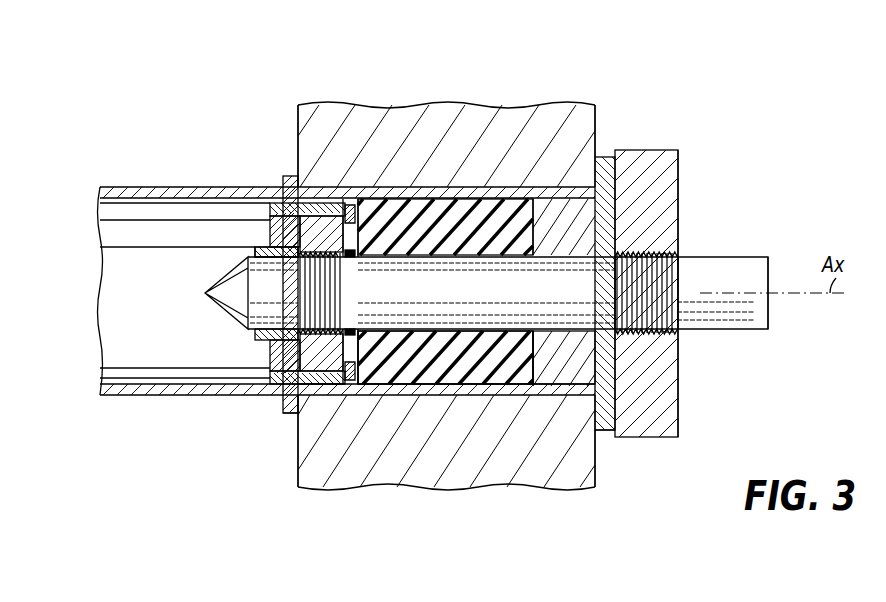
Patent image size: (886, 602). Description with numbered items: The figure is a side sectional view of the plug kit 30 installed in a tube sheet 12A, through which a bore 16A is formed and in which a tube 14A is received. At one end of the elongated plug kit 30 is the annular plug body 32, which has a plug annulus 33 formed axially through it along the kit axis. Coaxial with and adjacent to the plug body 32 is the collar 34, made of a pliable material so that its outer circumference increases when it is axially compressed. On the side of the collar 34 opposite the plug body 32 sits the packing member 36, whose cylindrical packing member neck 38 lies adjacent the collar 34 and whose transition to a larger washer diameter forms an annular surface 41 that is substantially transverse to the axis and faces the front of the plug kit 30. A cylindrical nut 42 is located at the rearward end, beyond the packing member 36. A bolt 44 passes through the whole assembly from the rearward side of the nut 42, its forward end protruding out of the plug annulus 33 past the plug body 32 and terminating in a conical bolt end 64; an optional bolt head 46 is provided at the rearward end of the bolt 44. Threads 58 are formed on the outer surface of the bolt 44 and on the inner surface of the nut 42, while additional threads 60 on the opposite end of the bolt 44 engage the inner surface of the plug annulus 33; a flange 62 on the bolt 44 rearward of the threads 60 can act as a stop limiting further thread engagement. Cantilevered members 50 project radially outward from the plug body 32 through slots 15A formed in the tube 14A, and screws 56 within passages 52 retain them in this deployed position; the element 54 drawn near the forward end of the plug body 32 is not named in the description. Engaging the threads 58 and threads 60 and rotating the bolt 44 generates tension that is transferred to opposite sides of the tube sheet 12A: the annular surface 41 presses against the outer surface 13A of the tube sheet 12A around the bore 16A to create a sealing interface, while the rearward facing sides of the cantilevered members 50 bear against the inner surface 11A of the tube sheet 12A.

The inner surface 11A is at (297, 104).
The tube sheet 12A is at (312, 143).
The outer surface 13A is at (598, 476).
The tube 14A is at (137, 187).
The slots 15A is at (283, 176).
The bore 16A is at (432, 199).
The plug kit 30 is at (682, 82).
The plug body 32 is at (272, 352).
The plug annulus 33 is at (255, 337).
The collar 34 is at (468, 365).
The packing member 36 is at (606, 445).
The packing member neck 38 is at (568, 372).
The annular surface 41 is at (600, 156).
The nut 42 is at (648, 150).
The bolt 44 is at (751, 340).
The bolt head 46 is at (740, 266).
The cantilevered members 50 is at (283, 413).
The passages 52 is at (270, 208).
The front collar 54 is at (255, 250).
The screws 56 is at (298, 398).
The threads 58 is at (657, 250).
The threads 60 is at (332, 350).
The flange 62 is at (358, 308).
The bolt end 64 is at (197, 303).